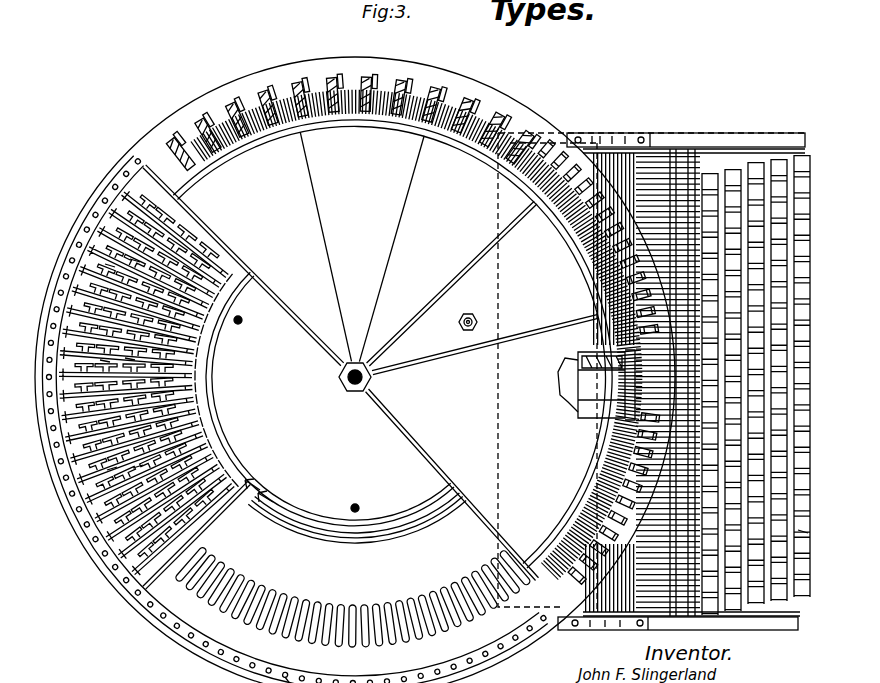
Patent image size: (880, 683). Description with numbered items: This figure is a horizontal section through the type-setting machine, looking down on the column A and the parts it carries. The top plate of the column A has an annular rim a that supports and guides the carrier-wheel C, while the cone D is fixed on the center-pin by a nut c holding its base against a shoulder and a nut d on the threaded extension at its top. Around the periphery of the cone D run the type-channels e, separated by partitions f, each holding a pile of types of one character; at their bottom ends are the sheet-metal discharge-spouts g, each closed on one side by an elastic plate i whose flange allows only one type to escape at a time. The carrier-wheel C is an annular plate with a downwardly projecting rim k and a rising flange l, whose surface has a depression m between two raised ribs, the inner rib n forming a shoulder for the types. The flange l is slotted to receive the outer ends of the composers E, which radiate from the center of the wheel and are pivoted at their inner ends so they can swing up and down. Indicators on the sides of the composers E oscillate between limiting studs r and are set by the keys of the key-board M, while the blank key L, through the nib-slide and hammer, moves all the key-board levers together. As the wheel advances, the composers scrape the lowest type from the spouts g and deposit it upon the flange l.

The column A is at (231, 202).
The carrier-wheel C is at (341, 414).
The nut c is at (371, 360).
The cone D is at (234, 132).
The nut d is at (596, 385).
The composers E is at (149, 381).
The type-channels e is at (353, 114).
The partitions f is at (123, 364).
The discharge-spouts g is at (599, 340).
The annular rim a is at (611, 568).
The blank key L is at (807, 564).
The rising flange l is at (345, 596).
The depression m is at (297, 420).
The raised rib n is at (285, 679).
The downwardly projecting rim k is at (678, 377).
The studs r is at (679, 384).
The elastic plate i is at (666, 622).
The key-board M is at (678, 618).
The type box t is at (807, 533).